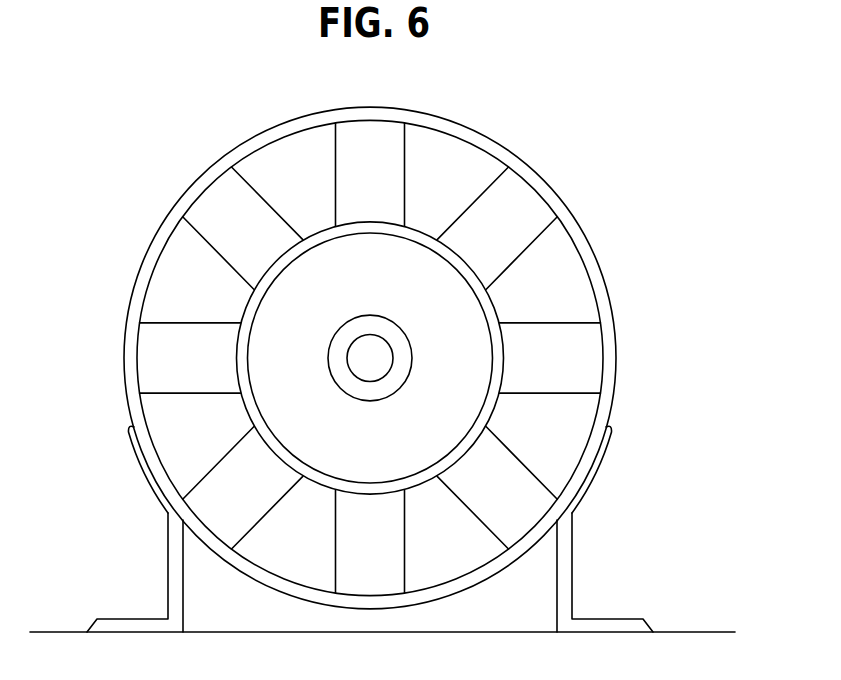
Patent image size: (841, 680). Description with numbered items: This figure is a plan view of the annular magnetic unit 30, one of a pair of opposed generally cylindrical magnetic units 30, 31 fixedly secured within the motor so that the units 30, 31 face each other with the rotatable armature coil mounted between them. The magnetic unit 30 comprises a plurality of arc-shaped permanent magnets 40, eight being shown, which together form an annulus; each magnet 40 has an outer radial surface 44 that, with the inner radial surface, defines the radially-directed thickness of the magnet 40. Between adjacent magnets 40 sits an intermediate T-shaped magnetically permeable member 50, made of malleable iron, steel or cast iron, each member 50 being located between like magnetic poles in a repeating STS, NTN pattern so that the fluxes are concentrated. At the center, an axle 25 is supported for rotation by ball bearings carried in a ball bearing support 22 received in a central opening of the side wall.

The ball bearing support 22 is at (407, 378).
The axle 25 is at (366, 334).
The magnetic unit 30 is at (382, 368).
The magnetic unit 31 is at (382, 368).
The permanent magnet 40 is at (166, 279).
The outer radial surface 44 is at (169, 235).
The T-shaped magnetically permeable member 50 is at (226, 170).